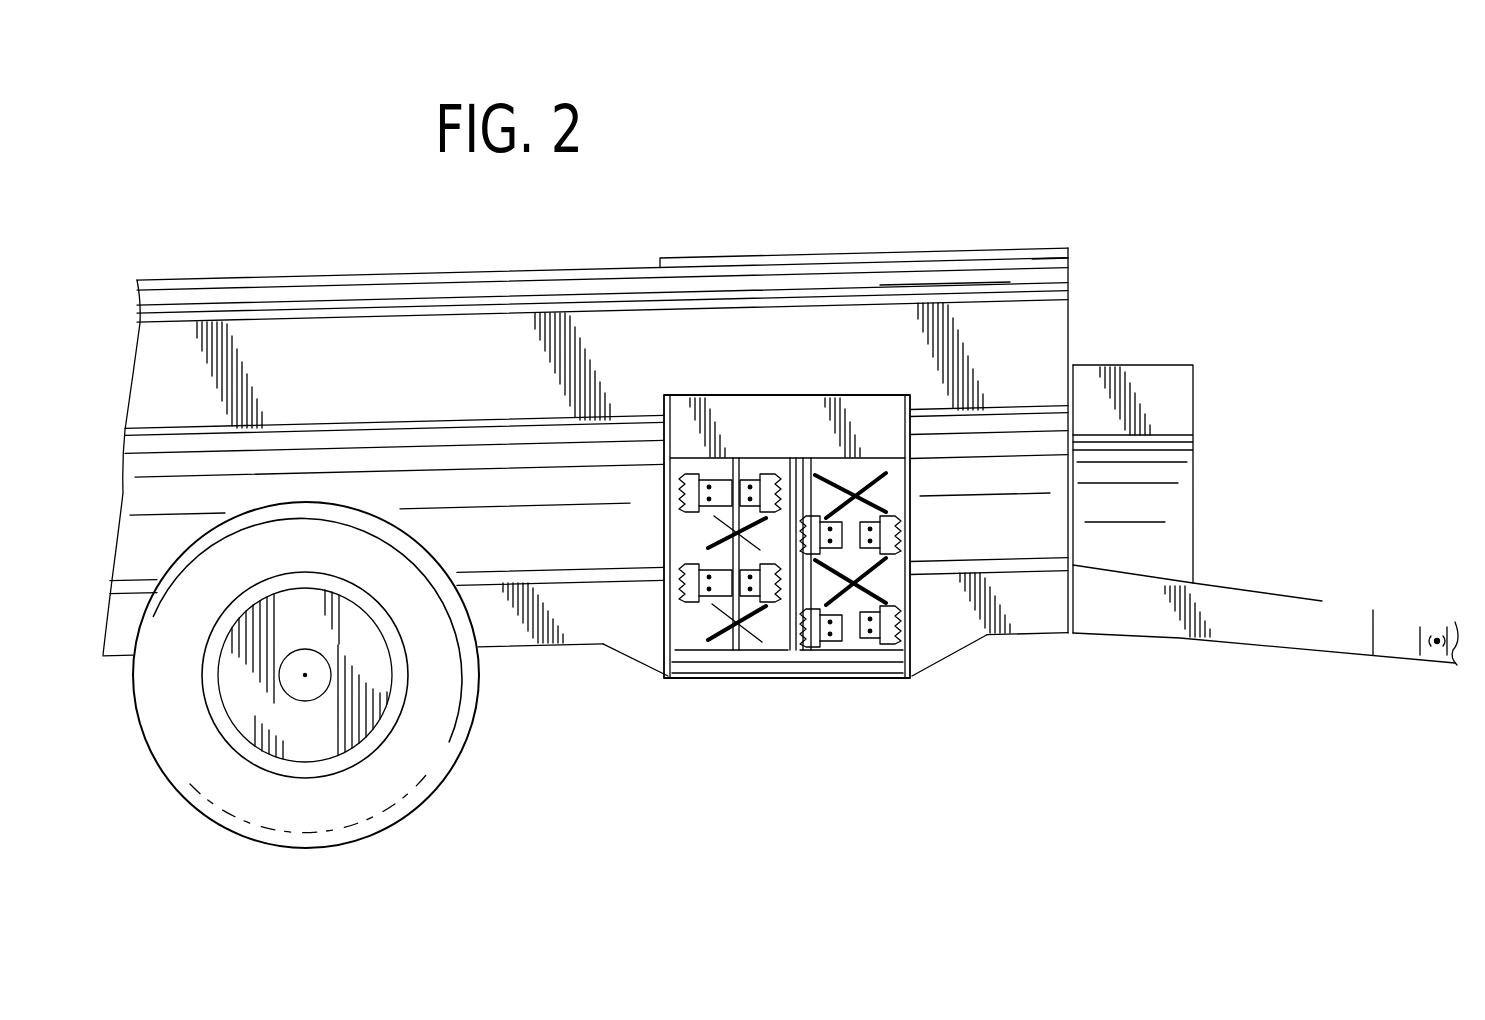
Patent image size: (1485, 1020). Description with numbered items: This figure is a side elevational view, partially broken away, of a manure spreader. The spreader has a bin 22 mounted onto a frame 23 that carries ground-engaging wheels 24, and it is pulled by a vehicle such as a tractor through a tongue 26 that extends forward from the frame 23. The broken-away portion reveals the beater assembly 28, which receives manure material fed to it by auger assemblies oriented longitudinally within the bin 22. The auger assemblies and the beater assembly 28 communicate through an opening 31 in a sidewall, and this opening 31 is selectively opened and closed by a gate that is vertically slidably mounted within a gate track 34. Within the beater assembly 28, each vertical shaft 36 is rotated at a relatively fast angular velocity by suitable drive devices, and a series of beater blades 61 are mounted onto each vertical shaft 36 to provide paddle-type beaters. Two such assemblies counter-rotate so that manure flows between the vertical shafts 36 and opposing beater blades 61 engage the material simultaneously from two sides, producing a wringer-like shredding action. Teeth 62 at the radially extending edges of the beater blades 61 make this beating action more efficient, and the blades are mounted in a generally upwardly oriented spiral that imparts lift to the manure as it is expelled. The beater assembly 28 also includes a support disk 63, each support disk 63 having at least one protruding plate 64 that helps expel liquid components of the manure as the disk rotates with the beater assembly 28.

The bin 22 is at (233, 278).
The frame 23 is at (492, 622).
The ground-engaging wheels 24 is at (200, 773).
The tongue 26 is at (1274, 620).
The beater assembly 28 is at (664, 685).
The opening 31 is at (890, 485).
The gate track 34 is at (670, 548).
The vertical shaft 36 is at (733, 642).
The beater blades 61 is at (872, 474).
The teeth 62 is at (678, 494).
The support disk 63 is at (760, 650).
The protruding plate 64 is at (777, 653).